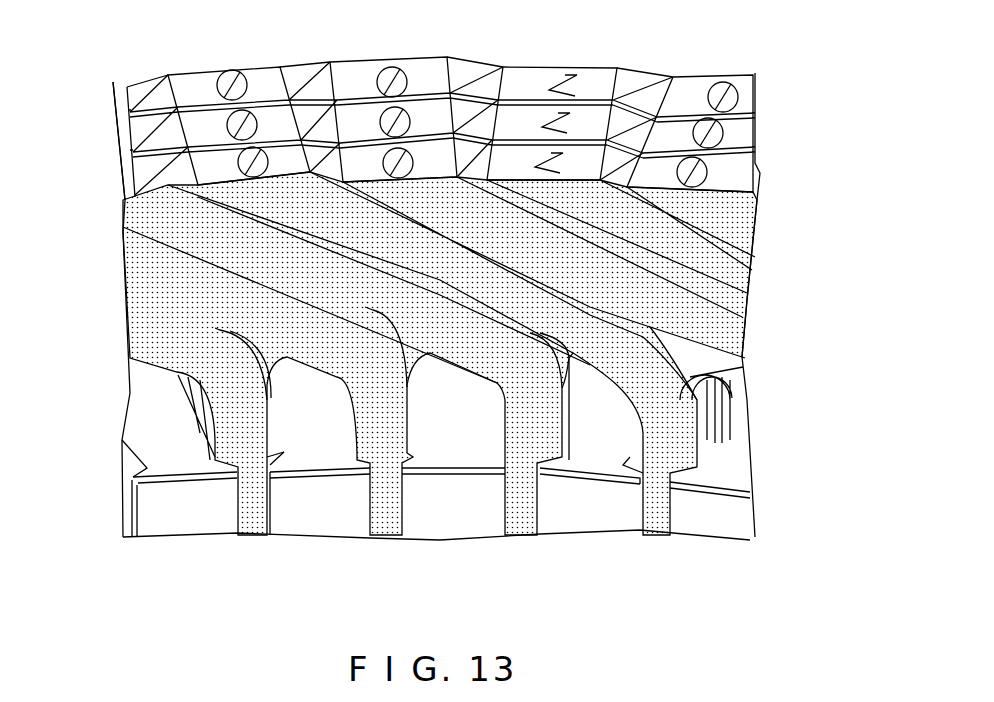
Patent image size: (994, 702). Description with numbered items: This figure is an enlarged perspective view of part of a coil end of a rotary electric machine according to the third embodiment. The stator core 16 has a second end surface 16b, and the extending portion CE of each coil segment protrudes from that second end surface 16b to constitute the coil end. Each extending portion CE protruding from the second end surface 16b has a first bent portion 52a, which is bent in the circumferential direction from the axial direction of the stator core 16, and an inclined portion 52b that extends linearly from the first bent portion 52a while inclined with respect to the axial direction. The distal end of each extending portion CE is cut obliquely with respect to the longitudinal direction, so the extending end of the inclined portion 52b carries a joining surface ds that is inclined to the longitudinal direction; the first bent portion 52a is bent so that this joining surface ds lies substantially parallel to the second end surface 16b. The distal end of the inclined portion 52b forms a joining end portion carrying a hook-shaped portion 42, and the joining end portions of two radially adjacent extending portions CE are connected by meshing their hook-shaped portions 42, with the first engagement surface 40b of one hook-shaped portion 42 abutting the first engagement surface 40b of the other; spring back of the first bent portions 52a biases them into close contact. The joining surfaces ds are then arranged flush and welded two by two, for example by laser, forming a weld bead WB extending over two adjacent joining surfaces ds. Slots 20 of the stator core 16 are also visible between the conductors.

The joining surface ds is at (188, 87).
The weld bead WB is at (225, 70).
The first engagement surface 40b is at (573, 80).
The hook-shaped portion 42 is at (517, 170).
The inclined portion 52b is at (700, 240).
The first bent portion 52a is at (677, 405).
The extending portion CE is at (127, 328).
The stator core 16 is at (587, 507).
The second end surface 16b is at (137, 402).
The slot 20 is at (340, 420).